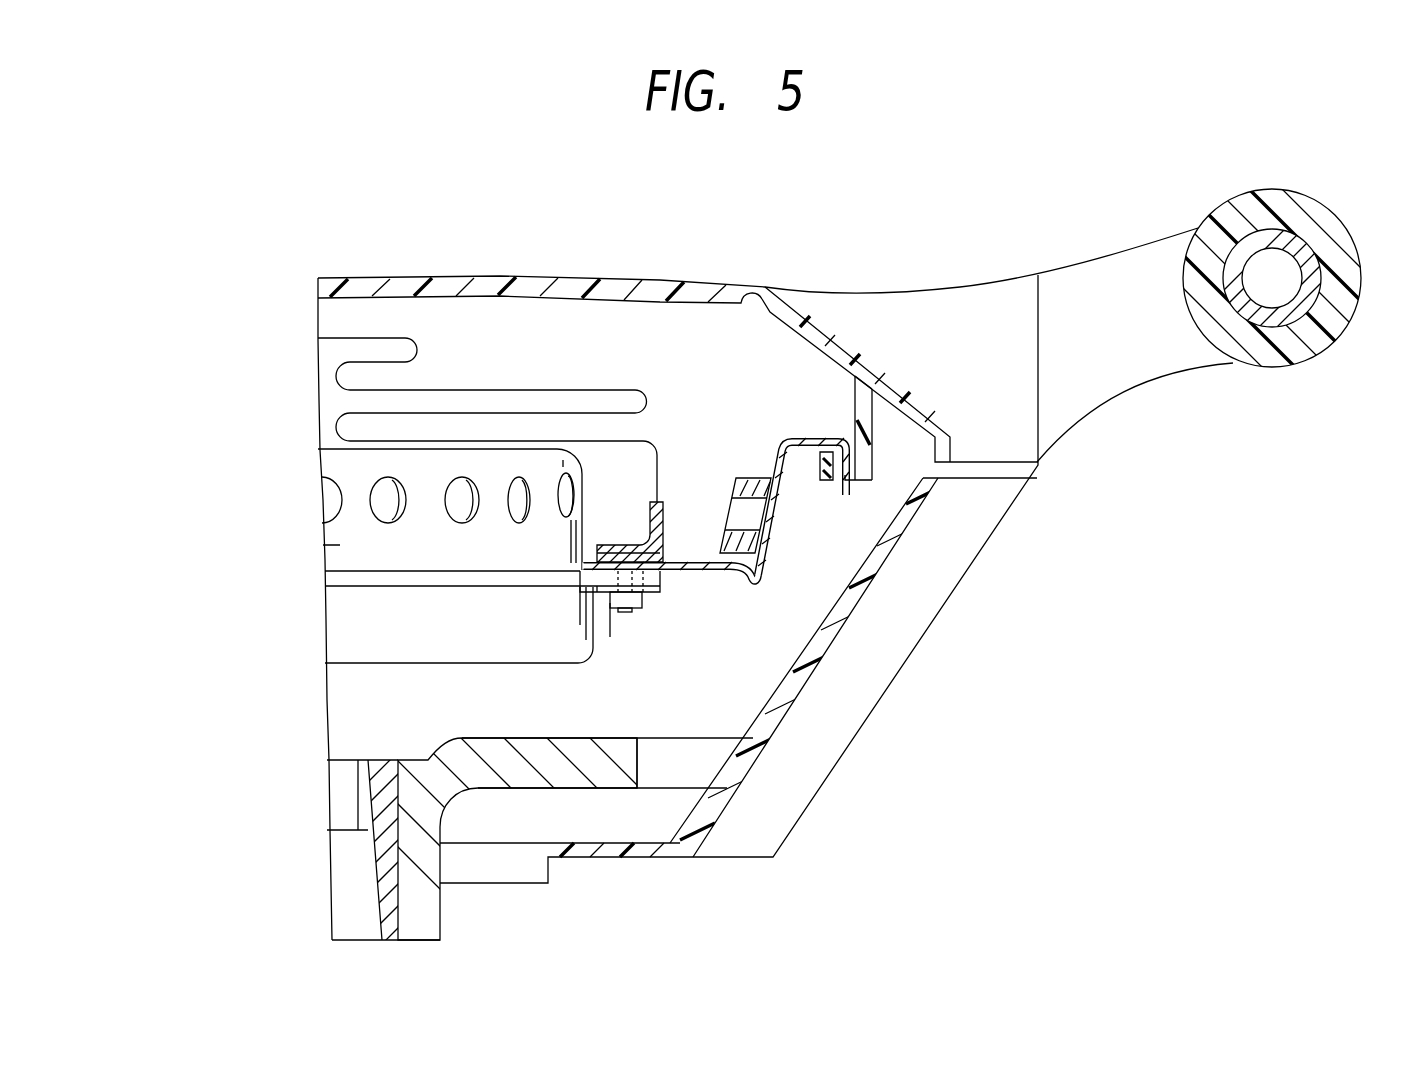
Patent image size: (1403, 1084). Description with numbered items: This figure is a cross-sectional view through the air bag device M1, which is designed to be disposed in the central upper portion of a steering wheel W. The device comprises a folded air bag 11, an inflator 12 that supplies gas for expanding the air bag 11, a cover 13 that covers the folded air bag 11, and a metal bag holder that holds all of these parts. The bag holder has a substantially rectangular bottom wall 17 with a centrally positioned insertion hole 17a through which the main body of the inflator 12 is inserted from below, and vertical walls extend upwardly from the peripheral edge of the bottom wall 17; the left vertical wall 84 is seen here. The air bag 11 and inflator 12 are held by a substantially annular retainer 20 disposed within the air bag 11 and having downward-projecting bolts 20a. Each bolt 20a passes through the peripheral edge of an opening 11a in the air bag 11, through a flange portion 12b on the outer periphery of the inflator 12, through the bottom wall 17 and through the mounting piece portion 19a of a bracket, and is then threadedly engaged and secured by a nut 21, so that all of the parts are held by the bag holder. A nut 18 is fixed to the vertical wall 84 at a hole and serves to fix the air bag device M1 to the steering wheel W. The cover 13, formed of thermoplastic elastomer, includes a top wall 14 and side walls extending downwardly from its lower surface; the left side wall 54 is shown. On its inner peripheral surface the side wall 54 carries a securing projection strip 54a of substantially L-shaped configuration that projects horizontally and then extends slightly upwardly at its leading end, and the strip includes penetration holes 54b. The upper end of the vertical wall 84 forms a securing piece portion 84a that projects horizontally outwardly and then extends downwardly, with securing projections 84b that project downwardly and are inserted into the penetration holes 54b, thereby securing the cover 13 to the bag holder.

The air bag 11 is at (350, 338).
The opening 11a is at (587, 556).
The inflator 12 is at (323, 543).
The flange portion 12b is at (390, 580).
The cover 13 is at (672, 275).
The top wall 14 is at (538, 280).
The bottom wall 17 is at (712, 572).
The insertion hole 17a is at (587, 580).
The nut 18 is at (745, 480).
The mounting piece portion 19a is at (661, 590).
The retainer 20 is at (605, 545).
The bolt 20a is at (625, 612).
The nut 21 is at (610, 603).
The side wall 54 is at (867, 400).
The securing projection strip 54a is at (847, 492).
The penetration hole 54b is at (870, 468).
The vertical wall 84 is at (786, 463).
The securing piece portion 84a is at (828, 438).
The securing projection 84b is at (853, 497).
The steering wheel W is at (1195, 178).
The air bag device M1 is at (304, 600).